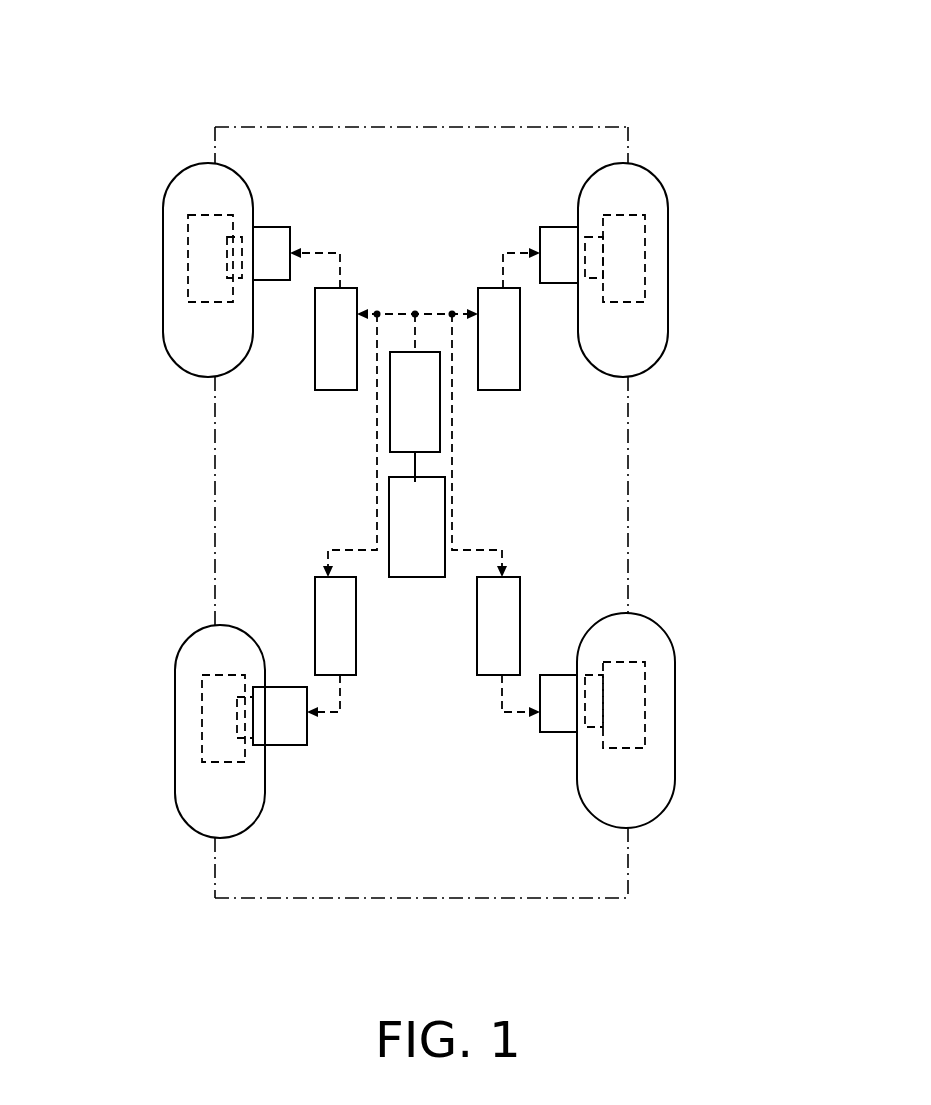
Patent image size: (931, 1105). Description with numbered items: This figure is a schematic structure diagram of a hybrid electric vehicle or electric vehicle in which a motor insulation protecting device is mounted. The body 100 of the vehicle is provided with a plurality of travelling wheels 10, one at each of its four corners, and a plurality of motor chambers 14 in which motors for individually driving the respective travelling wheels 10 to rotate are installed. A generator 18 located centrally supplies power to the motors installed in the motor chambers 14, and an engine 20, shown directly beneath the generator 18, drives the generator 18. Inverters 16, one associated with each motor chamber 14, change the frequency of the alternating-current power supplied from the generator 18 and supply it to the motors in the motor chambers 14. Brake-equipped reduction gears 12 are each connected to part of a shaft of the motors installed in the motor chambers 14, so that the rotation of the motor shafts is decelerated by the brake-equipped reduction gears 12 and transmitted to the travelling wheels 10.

The body 100 is at (480, 45).
The travelling wheel 10 is at (163, 313).
The brake-equipped reduction gear 12 is at (188, 252).
The motor chamber 14 is at (280, 227).
The inverter 16 is at (315, 377).
The generator 18 is at (440, 413).
The engine 20 is at (415, 552).